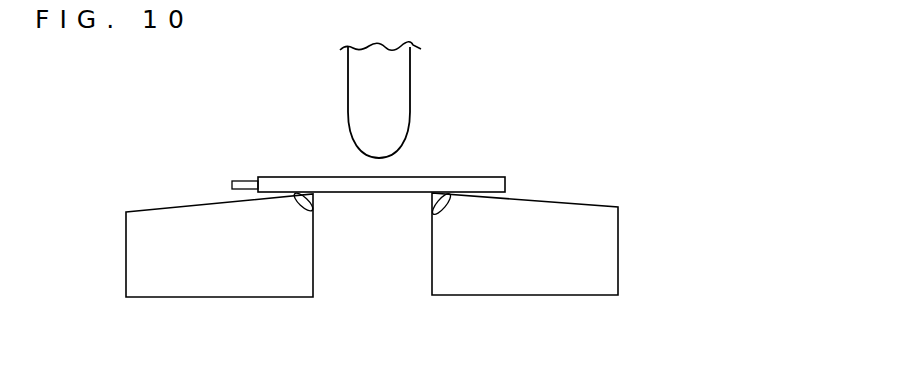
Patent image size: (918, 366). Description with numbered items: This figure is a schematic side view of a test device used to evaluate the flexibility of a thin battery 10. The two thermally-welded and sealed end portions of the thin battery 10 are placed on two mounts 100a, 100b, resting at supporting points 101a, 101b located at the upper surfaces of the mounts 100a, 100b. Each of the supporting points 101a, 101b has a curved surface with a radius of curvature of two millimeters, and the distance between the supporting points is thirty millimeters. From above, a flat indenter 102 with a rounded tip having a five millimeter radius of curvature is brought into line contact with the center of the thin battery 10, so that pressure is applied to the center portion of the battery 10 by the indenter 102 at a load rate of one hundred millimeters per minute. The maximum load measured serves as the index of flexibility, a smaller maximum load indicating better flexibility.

The thin battery 10 is at (421, 185).
The flat indenter 102 is at (395, 82).
The mount 100a is at (213, 285).
The mount 100b is at (533, 283).
The supporting point 101a is at (311, 211).
The supporting point 101b is at (435, 220).